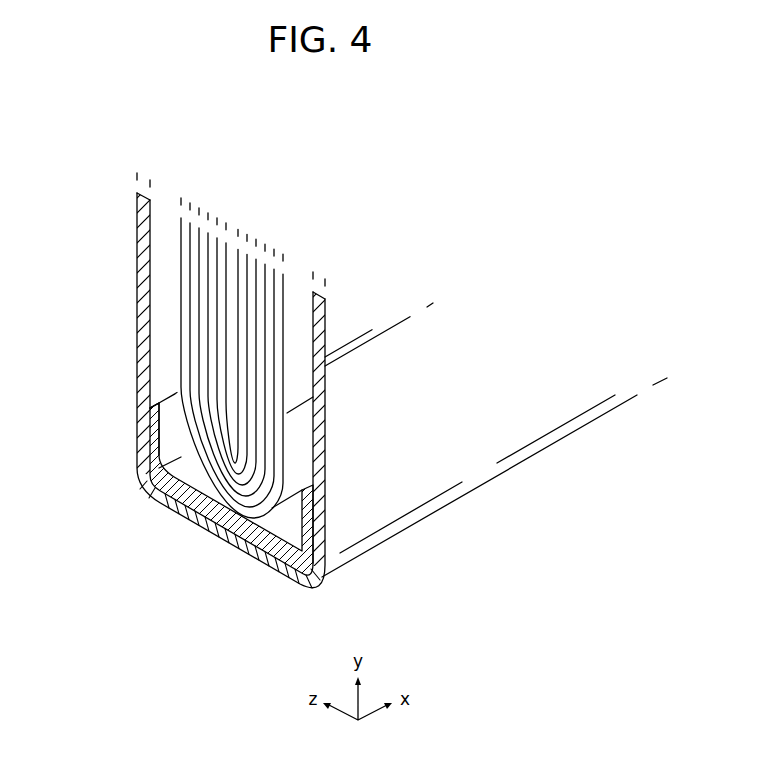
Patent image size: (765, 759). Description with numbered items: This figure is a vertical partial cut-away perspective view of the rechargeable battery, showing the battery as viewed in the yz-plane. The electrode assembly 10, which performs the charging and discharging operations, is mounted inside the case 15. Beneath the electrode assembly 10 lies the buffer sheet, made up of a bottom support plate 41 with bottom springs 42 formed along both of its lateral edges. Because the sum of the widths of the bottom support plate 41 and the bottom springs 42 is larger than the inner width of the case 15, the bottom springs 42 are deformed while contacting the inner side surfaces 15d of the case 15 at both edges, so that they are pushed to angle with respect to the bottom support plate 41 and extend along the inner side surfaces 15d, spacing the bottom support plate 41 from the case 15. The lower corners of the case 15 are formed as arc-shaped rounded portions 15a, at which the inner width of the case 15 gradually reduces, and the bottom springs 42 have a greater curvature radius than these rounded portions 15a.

The electrode assembly 10 is at (170, 272).
The case 15 is at (359, 380).
The rounded portions 15a is at (143, 467).
The inner side surfaces 15d is at (162, 372).
The bottom support plate 41 is at (246, 490).
The bottom springs 42 is at (162, 429).